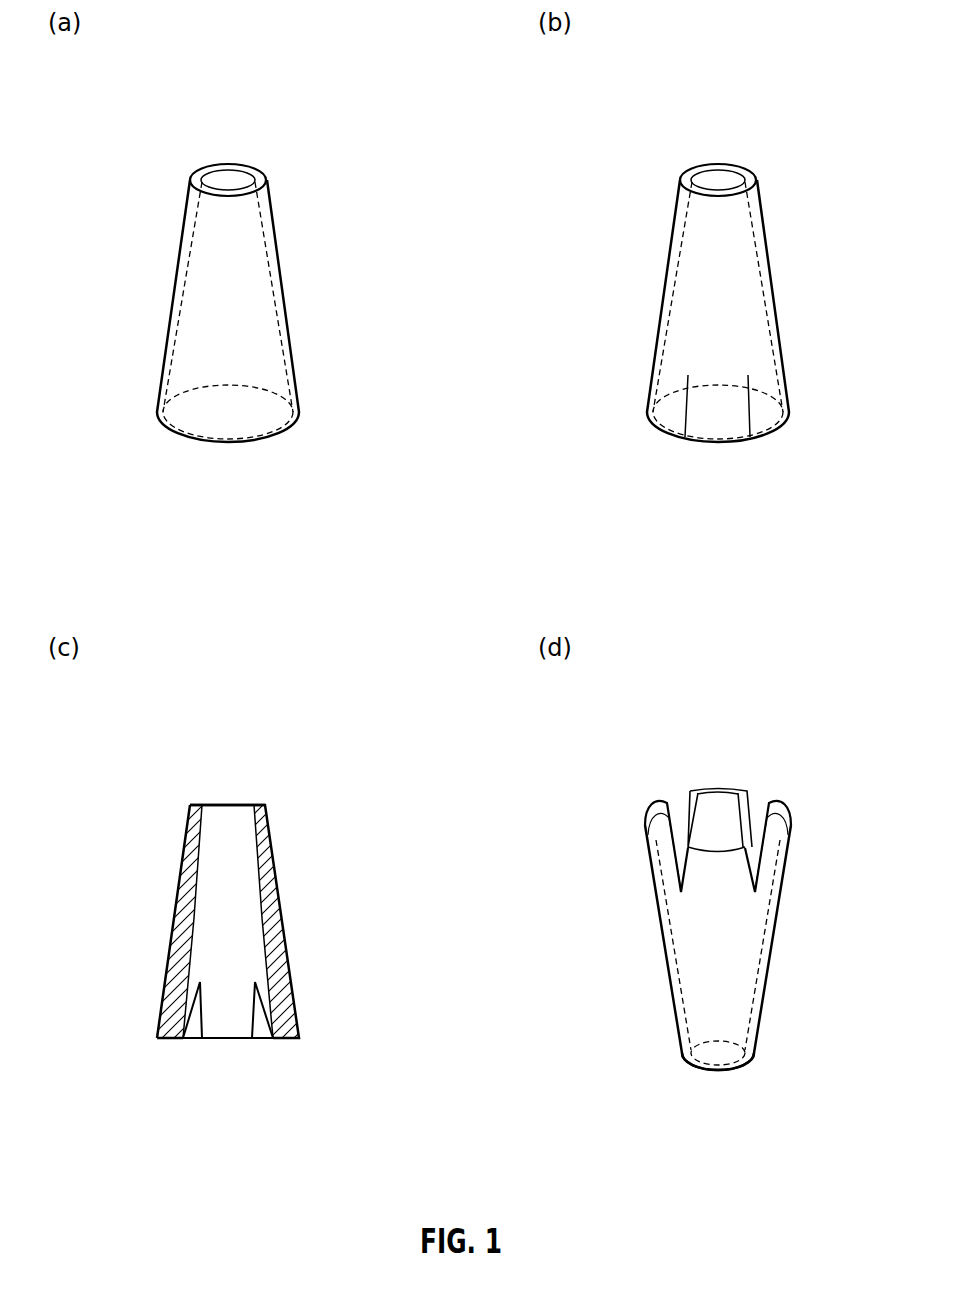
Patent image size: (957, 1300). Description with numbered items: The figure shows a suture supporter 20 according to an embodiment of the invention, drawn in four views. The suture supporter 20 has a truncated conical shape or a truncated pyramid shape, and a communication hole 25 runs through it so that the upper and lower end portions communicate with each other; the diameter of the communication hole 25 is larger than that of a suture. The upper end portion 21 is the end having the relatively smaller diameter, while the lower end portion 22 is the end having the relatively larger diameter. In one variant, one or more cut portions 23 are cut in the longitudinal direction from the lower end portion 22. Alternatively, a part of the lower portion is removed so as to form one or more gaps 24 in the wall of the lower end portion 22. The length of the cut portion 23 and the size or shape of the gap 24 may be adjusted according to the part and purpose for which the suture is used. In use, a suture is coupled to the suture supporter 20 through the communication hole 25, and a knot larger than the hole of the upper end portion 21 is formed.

The suture supporter 20 is at (300, 192).
The upper end portion 21 is at (213, 162).
The lower end portion 22 is at (197, 445).
The cut portion 23 is at (685, 412).
The gap 24 is at (262, 1035).
The communication hole 25 is at (228, 178).